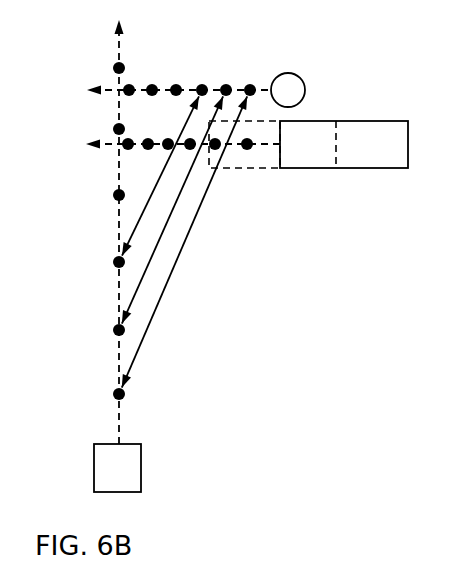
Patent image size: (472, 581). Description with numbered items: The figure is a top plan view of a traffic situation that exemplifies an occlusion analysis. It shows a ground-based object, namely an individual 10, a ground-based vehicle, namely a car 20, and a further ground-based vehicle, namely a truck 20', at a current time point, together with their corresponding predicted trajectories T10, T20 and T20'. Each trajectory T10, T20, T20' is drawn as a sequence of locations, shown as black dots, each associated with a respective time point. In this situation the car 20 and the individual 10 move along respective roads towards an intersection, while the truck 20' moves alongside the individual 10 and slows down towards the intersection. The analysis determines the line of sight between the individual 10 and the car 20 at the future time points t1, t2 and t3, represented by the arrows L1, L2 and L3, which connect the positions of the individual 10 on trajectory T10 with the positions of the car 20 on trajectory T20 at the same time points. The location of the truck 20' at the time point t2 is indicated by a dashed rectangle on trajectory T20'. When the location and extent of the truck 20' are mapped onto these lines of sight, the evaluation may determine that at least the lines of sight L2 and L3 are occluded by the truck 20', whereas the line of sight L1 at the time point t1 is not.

The GBO 10 is at (298, 91).
The GBV 20 is at (89, 468).
The further GBV 20' is at (308, 170).
The predicted trajectory T10 is at (170, 88).
The predicted trajectory T20 is at (79, 232).
The predicted trajectory T20' is at (156, 123).
The future time point t1 is at (251, 84).
The future time point t2 is at (227, 84).
The future time point t3 is at (203, 84).
The LOS arrow L1 is at (158, 310).
The LOS arrow L2 is at (135, 290).
The LOS arrow L3 is at (134, 224).